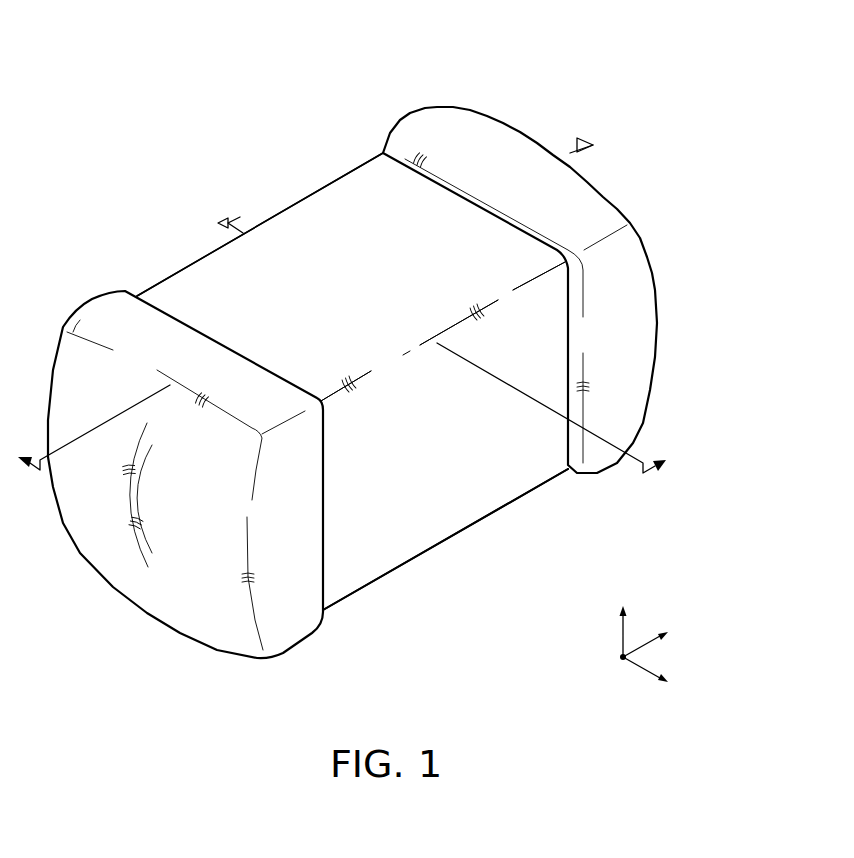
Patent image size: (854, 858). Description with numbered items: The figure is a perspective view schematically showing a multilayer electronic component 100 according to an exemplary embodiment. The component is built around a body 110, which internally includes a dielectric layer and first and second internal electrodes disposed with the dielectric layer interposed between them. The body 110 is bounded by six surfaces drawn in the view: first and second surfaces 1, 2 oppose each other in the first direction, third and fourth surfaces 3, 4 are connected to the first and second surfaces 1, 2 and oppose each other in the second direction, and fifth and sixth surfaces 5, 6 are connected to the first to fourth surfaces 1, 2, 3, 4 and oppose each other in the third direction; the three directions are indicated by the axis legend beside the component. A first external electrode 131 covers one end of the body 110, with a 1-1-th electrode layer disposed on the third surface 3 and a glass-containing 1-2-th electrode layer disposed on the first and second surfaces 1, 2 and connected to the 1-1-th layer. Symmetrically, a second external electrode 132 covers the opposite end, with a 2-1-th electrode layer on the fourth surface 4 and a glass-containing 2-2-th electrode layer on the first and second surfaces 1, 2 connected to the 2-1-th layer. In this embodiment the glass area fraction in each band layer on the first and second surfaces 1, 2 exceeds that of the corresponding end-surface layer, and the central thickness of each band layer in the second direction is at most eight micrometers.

The multilayer electronic component 100 is at (398, 365).
The body 110 is at (352, 373).
The first external electrode 131 is at (183, 450).
The second external electrode 132 is at (520, 259).
The first surface 1 is at (363, 186).
The second surface 2 is at (420, 560).
The third surface 3 is at (92, 540).
The fourth surface 4 is at (498, 133).
The fifth surface 5 is at (188, 264).
The sixth surface 6 is at (496, 495).